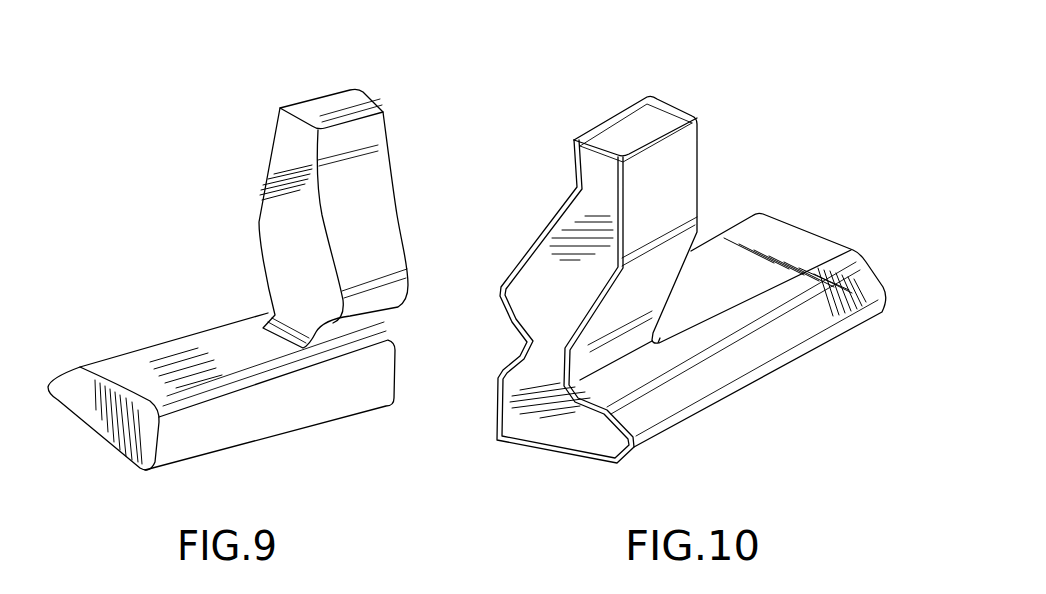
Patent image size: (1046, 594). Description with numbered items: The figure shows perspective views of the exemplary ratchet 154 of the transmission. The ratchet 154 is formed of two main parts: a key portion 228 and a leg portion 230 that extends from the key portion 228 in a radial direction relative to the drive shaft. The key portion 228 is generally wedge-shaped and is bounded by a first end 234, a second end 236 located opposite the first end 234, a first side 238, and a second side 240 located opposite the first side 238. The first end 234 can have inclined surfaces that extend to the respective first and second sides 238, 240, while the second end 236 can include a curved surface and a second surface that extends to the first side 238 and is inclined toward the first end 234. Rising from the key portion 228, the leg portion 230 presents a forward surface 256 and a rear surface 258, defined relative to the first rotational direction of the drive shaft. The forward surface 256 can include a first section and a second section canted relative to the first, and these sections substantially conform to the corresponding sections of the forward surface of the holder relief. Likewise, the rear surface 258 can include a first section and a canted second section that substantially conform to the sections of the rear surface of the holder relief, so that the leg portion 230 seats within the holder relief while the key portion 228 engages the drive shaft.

In FIG. 9, the ratchet 154 is at (191, 152).
In FIG. 10, the ratchet 154 is at (806, 103).
In FIG. 9, the key portion 228 is at (297, 413).
In FIG. 10, the key portion 228 is at (730, 367).
In FIG. 9, the leg portion 230 is at (274, 228).
In FIG. 10, the leg portion 230 is at (698, 153).
In FIG. 9, the first end 234 is at (65, 395).
In FIG. 10, the first end 234 is at (602, 442).
In FIG. 9, the second end 236 is at (190, 437).
In FIG. 10, the second end 236 is at (520, 420).
In FIG. 9, the first side 238 is at (210, 342).
In FIG. 10, the first side 238 is at (793, 240).
In FIG. 9, the second side 240 is at (112, 453).
In FIG. 10, the second side 240 is at (553, 448).
In FIG. 9, the forward surface 256 is at (368, 207).
In FIG. 10, the forward surface 256 is at (547, 223).
In FIG. 9, the rear surface 258 is at (264, 158).
In FIG. 10, the rear surface 258 is at (698, 197).